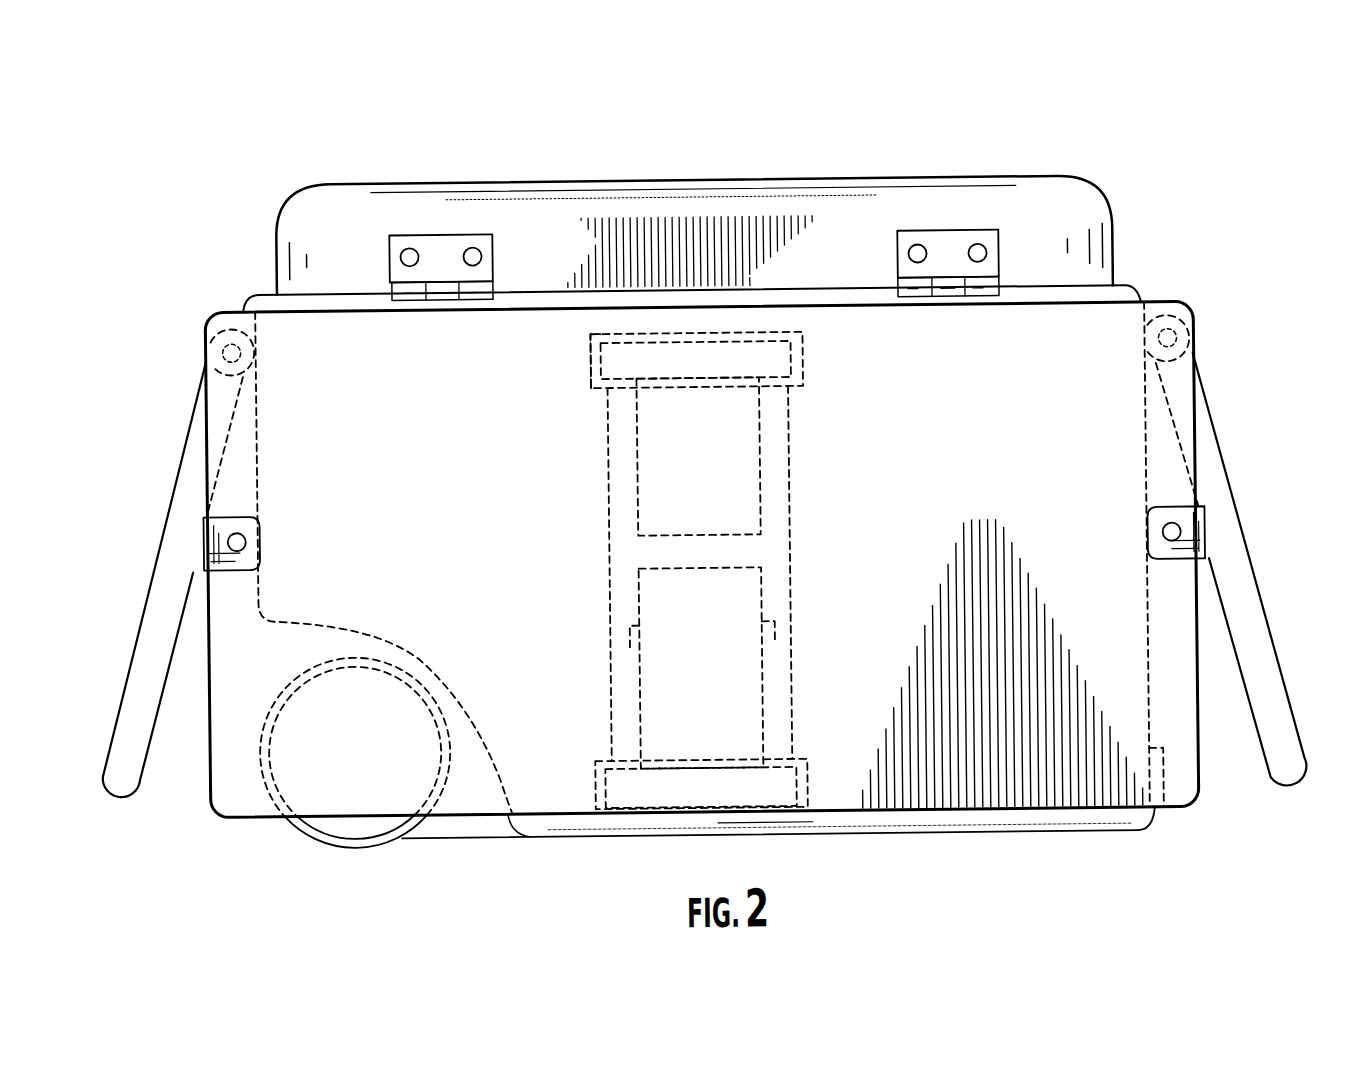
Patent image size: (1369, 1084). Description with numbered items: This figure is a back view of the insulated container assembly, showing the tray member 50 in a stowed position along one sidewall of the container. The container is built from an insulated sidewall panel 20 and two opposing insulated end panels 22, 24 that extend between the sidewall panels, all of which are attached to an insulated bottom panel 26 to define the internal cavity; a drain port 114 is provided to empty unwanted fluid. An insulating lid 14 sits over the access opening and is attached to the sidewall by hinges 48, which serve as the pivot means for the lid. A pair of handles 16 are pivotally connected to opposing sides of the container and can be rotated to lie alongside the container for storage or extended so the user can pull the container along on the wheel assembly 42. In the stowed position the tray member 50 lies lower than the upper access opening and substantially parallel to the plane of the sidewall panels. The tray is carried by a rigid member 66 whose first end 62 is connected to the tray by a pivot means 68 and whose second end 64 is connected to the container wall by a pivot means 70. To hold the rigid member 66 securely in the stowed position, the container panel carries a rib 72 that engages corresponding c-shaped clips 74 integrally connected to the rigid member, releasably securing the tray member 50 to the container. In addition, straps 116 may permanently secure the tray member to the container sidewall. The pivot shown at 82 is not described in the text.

The insulating lid 14 is at (776, 184).
The handle 16 is at (145, 572).
The insulated sidewall panel 20 is at (1087, 822).
The insulated end panel 22 is at (1147, 673).
The insulated end panel 24 is at (258, 434).
The insulated bottom panel 26 is at (621, 838).
The wheel assembly 42 is at (345, 843).
The hinge 48 is at (436, 233).
The tray member 50 is at (485, 592).
The first end 62 is at (820, 782).
The second end 64 is at (832, 370).
The rigid member 66 is at (807, 474).
The pivot means 68 is at (592, 358).
The pivot means 70 is at (680, 350).
The rib 72 is at (771, 536).
The c-shaped clip 74 is at (773, 638).
The pivot 82 is at (205, 373).
The drain port 114 is at (1162, 770).
The strap 116 is at (1160, 552).